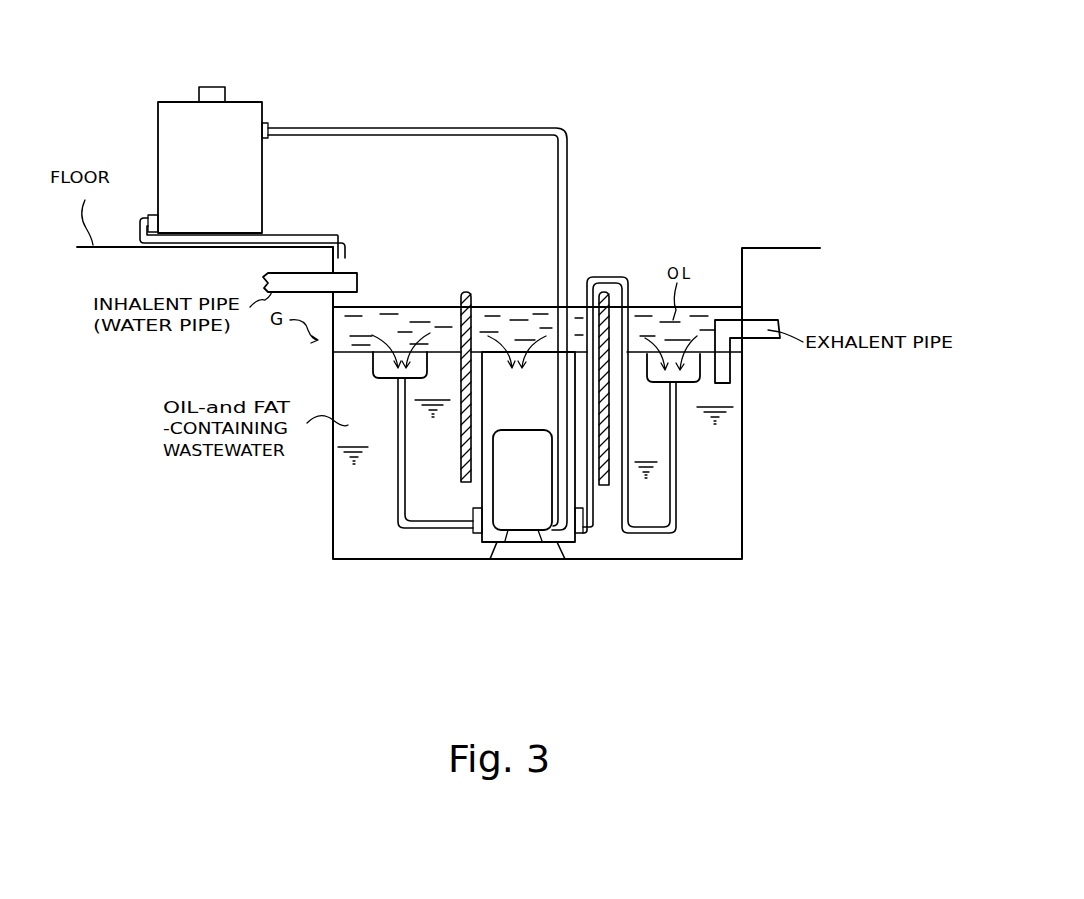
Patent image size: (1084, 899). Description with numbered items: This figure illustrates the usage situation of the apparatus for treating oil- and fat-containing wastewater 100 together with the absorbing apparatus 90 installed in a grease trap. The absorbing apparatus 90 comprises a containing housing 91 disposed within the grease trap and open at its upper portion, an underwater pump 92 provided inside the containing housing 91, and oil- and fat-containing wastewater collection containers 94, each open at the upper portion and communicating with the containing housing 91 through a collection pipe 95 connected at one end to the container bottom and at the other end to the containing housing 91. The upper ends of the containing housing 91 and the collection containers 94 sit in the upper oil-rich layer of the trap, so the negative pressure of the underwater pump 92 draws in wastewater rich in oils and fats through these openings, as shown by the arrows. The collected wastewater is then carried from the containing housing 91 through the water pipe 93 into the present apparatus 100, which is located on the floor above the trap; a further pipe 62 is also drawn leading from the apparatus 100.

The apparatus for treating oil- and fat-containing wastewater 100 is at (212, 63).
The water pipe 93 is at (415, 128).
The discharge pipe 62 is at (287, 235).
The oil- and fat-containing wastewater collection container 94 is at (375, 367).
The collection pipe 95 is at (398, 503).
The absorbing apparatus 90 is at (498, 483).
The containing housing 91 is at (490, 542).
The underwater pump 92 is at (538, 518).